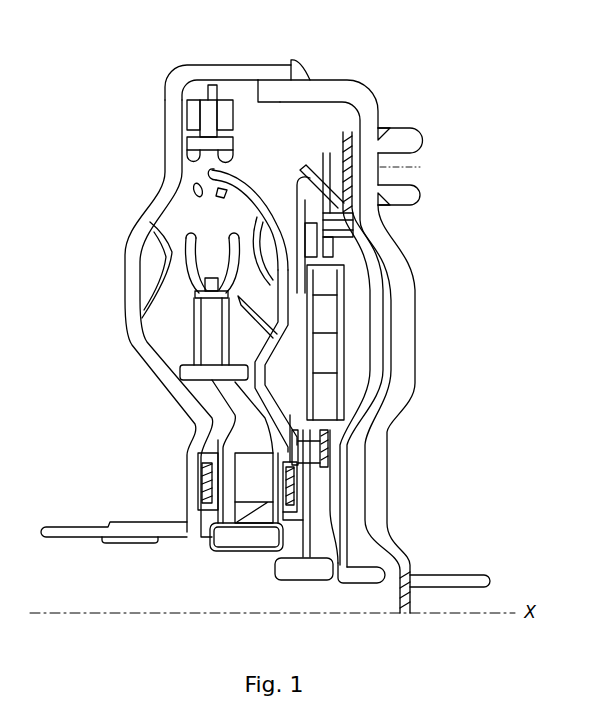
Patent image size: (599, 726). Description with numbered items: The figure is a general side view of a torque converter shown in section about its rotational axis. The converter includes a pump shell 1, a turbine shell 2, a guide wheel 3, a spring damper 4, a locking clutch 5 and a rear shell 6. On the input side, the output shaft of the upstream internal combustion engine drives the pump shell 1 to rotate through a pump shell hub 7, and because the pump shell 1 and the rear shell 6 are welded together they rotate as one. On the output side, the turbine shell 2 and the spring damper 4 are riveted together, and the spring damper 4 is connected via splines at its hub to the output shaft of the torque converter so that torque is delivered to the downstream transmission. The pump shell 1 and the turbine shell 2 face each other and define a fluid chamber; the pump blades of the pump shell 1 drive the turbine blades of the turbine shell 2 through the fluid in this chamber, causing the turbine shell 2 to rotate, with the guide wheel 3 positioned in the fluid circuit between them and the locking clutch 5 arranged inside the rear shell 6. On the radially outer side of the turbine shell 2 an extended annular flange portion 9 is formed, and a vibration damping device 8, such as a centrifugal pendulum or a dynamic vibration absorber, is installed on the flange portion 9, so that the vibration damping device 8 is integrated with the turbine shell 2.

The pump shell 1 is at (133, 218).
The turbine shell 2 is at (243, 187).
The guide wheel 3 is at (190, 336).
The spring damper 4 is at (332, 360).
The locking clutch 5 is at (368, 278).
The rear shell 6 is at (352, 82).
The pump shell hub 7 is at (122, 519).
The vibration damping device 8 is at (188, 92).
The flange portion 9 is at (223, 90).